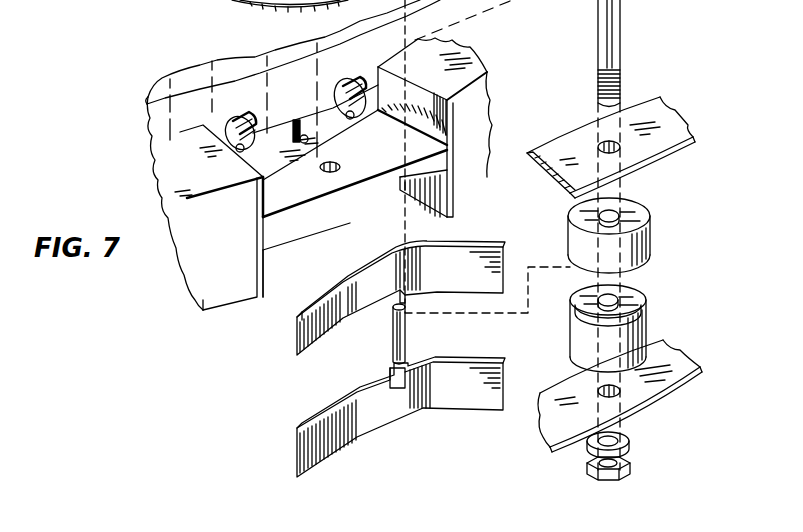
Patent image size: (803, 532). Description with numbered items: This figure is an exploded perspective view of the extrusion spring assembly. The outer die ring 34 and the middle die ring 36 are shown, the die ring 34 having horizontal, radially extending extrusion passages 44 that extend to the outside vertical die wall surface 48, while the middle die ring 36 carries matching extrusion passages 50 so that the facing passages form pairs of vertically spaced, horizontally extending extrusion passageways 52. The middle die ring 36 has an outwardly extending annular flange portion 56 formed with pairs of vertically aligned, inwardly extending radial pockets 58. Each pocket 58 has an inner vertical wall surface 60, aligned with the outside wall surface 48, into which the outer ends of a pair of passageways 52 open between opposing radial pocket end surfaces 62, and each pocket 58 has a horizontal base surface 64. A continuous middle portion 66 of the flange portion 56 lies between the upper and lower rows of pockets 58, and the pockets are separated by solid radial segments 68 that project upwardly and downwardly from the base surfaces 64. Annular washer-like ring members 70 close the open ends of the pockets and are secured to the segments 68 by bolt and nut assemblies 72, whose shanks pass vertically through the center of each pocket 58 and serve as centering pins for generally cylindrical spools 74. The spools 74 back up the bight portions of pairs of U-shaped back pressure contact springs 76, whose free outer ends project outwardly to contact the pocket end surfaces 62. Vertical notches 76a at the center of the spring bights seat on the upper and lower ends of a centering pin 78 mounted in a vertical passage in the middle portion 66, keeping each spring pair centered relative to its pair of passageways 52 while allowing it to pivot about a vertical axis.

The die ring 34 is at (420, 24).
The middle die ring 36 is at (470, 158).
The extrusion passages 44 is at (247, 124).
The outside vertical die wall surface 48 is at (242, 104).
The extrusion passages 50 is at (250, 147).
The extrusion passageways 52 is at (256, 124).
The annular flange portion 56 is at (233, 303).
The radial pockets 58 is at (266, 194).
The inner vertical wall surface 60 is at (305, 148).
The pocket end surfaces 62 is at (416, 109).
The base surface 64 is at (420, 146).
The middle portion 66 is at (307, 228).
The radial segments 68 is at (190, 175).
The ring members 70 is at (667, 107).
The bolt and nut assemblies 72 is at (612, 47).
The spools 74 is at (647, 203).
The contact springs 76 is at (463, 277).
The notches 76a is at (406, 300).
The centering pin 78 is at (405, 332).